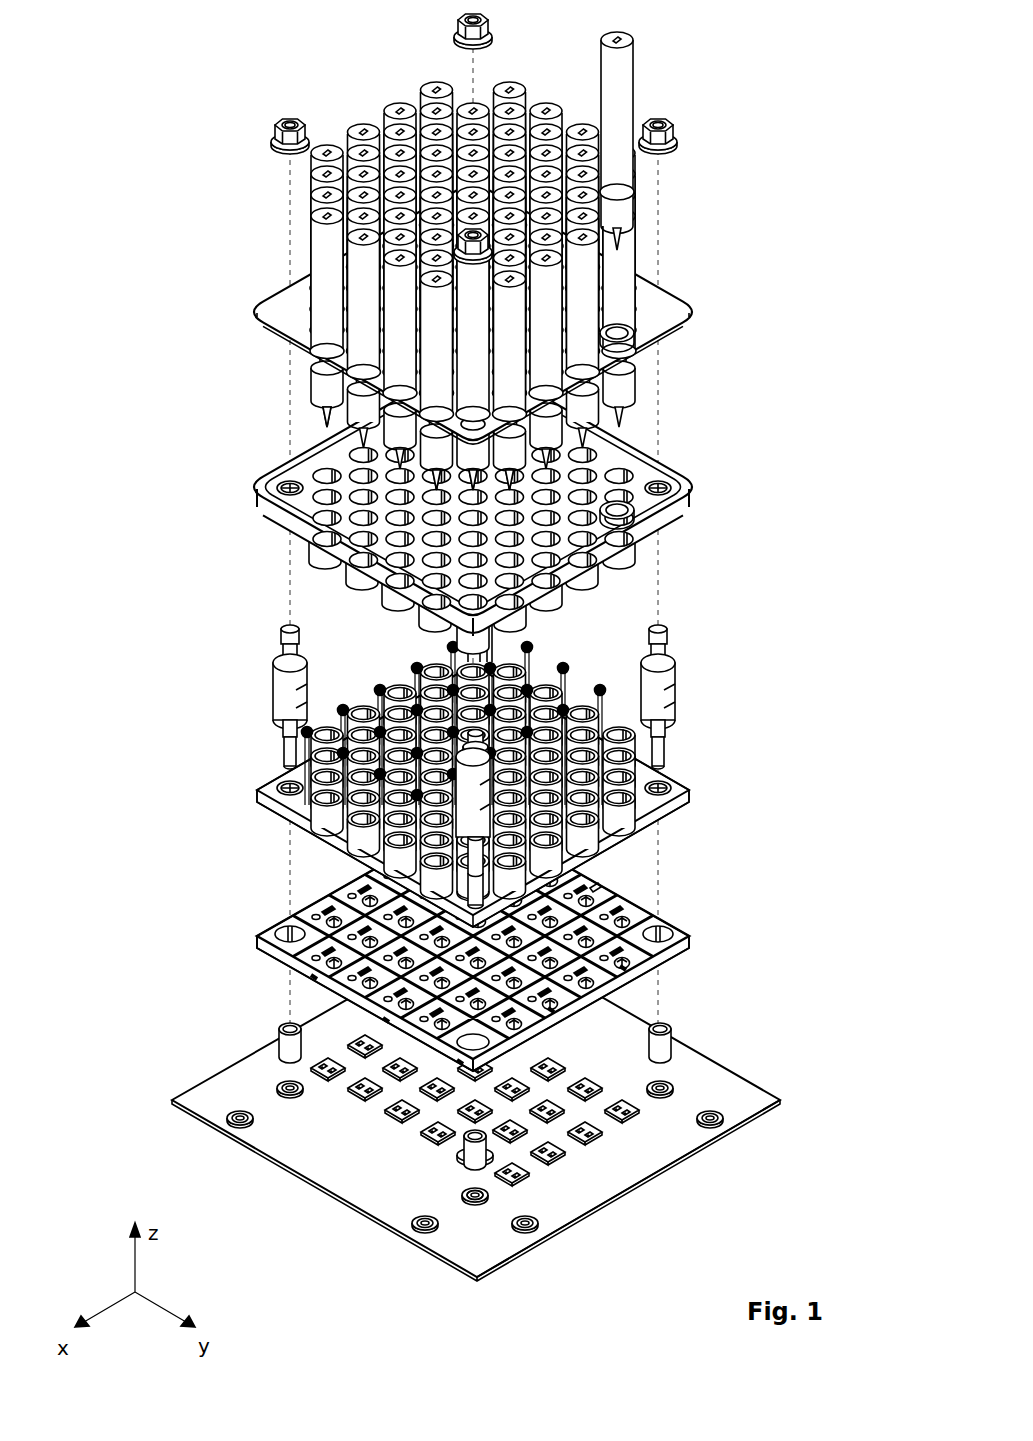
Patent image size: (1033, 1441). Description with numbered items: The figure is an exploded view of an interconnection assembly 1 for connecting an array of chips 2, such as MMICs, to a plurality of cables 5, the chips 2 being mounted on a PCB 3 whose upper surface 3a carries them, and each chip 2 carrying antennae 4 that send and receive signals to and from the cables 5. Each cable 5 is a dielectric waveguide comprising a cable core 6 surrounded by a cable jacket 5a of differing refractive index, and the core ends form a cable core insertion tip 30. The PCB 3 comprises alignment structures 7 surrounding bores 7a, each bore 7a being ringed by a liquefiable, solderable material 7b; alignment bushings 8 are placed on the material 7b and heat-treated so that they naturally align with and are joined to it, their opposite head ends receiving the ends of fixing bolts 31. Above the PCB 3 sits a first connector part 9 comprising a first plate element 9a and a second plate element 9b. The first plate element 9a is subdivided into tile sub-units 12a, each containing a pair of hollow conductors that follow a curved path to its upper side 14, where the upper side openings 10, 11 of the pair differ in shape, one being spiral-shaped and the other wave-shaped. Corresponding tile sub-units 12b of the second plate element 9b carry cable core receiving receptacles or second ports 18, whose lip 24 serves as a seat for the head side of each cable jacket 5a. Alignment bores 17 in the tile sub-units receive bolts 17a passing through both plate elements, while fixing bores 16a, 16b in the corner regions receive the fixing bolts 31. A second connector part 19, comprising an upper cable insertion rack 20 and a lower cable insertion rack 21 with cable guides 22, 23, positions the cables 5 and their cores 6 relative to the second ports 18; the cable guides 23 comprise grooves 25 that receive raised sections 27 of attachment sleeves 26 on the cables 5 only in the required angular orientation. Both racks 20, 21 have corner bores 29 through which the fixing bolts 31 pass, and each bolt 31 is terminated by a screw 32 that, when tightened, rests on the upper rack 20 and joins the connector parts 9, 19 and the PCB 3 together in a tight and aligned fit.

The interconnection assembly 1 is at (478, 669).
The chip 2 is at (307, 1075).
The PCB 3 is at (500, 1103).
The base plate surface 3a is at (709, 1091).
The antenna 4 is at (288, 1033).
The cable 5 is at (306, 237).
The cable jacket 5a is at (322, 288).
The cable core 6 is at (712, 141).
The alignment structure 7 is at (475, 1203).
The bore 7a is at (473, 1197).
The liquefiable material 7b is at (487, 1197).
The alignment bushing 8 is at (447, 1165).
The first connector part 9 is at (478, 810).
The first plate element 9a is at (482, 902).
The second plate element 9b is at (478, 746).
The upper side opening of hollow conductor 10 is at (648, 968).
The upper side opening of hollow conductor 11 is at (640, 918).
The tile sub-unit 12a is at (628, 976).
The tile sub-unit 12b is at (598, 892).
The upper side 14 is at (634, 909).
The fixing bore 16a is at (676, 930).
The fixing bore 16b is at (640, 790).
The alignment bore 17 is at (297, 944).
The bolt 17a is at (412, 664).
The second port 18 is at (320, 775).
The second connector part 19 is at (476, 338).
The upper cable insertion rack 20 is at (476, 252).
The lower cable insertion rack 21 is at (476, 446).
The cable guide 22 is at (661, 345).
The cable guide 23 is at (617, 475).
The lip 24 is at (492, 786).
The groove 25 is at (617, 512).
The attachment sleeve 26 is at (617, 210).
The raised section 27 is at (635, 203).
The fixing bore 29 is at (671, 309).
The cable core insertion tip 30 is at (327, 419).
The fixing bolt 31 is at (271, 684).
The screw 32 is at (280, 122).